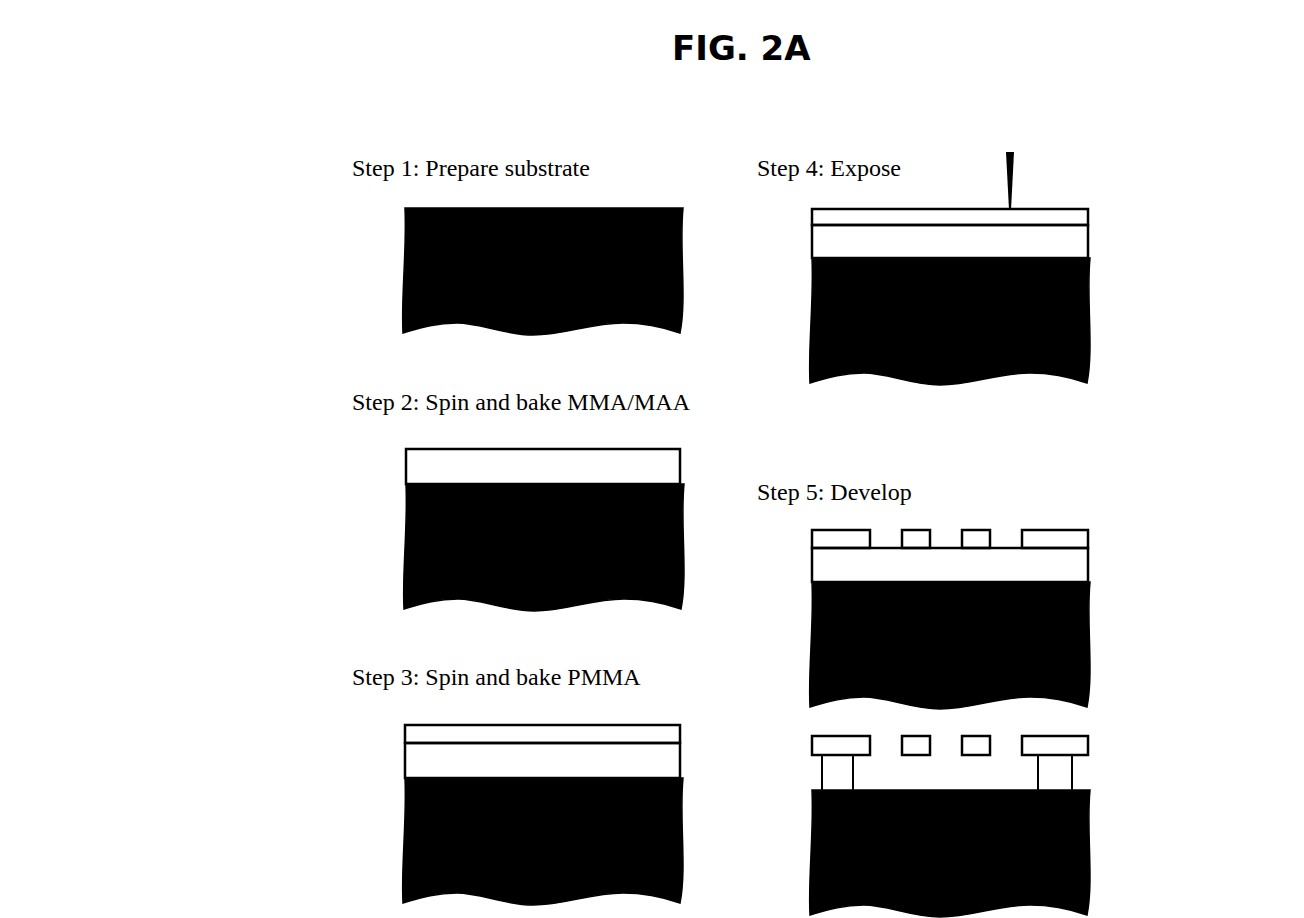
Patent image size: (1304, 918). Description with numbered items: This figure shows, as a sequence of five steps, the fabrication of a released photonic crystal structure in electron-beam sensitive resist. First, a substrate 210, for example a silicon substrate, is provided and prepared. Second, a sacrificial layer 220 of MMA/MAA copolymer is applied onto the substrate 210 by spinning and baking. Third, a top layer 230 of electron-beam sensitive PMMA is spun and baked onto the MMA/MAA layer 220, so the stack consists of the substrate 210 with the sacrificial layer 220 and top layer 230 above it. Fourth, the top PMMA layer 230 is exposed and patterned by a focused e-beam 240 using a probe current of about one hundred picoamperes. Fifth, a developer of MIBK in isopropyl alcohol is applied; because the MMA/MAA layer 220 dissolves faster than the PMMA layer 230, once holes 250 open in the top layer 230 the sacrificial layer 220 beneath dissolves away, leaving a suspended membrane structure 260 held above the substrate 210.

The substrate 210 is at (384, 282).
The sacrificial layer 220 is at (384, 463).
The top layer 230 is at (384, 737).
The focused e-beam 240 is at (1038, 166).
The holes 250 is at (1017, 524).
The suspended membrane structure 260 is at (998, 736).